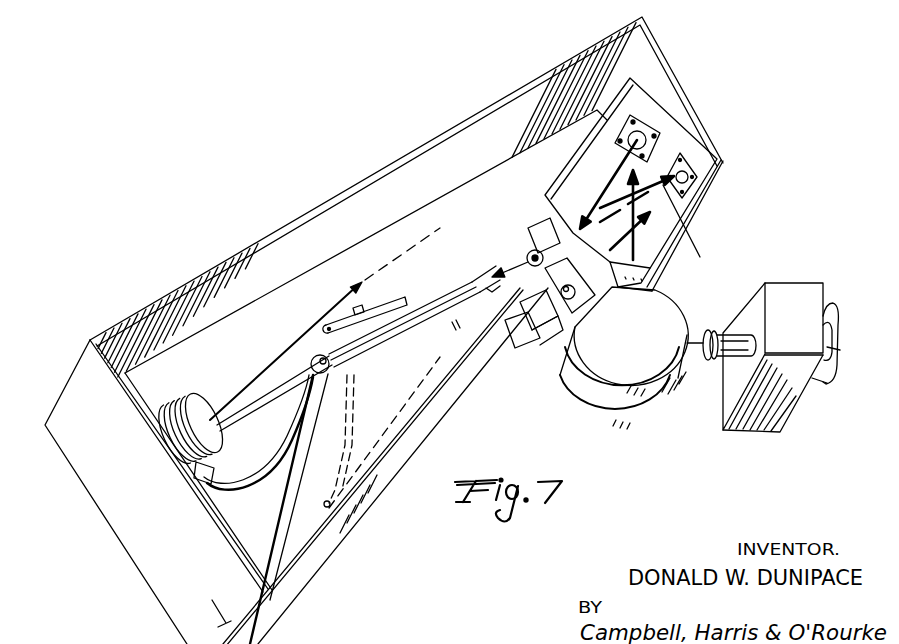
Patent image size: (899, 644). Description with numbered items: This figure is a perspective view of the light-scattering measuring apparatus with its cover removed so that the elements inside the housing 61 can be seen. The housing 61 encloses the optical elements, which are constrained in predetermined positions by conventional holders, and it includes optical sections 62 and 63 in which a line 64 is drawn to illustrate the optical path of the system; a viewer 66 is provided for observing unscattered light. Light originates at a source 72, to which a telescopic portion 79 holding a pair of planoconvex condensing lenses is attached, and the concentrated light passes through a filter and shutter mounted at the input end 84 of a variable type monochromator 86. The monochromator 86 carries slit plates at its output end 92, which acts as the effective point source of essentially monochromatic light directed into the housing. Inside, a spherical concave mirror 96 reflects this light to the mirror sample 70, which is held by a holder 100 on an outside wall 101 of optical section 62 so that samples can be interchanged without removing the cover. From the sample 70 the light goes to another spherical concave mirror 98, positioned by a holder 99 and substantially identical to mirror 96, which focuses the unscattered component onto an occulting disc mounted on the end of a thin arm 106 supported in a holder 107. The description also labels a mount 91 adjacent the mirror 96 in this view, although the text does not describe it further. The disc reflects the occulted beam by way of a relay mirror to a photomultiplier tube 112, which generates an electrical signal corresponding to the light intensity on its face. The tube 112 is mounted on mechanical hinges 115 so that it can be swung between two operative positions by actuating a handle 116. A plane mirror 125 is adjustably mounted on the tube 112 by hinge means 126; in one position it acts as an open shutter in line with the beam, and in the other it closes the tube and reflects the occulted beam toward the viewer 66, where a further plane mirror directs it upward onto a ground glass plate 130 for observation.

The housing 61 is at (380, 500).
The optical section 62 is at (605, 209).
The optical section 63 is at (465, 249).
The line 64 is at (530, 252).
The viewer 66 is at (488, 388).
The mirror sample 70 is at (540, 300).
The source 72 is at (797, 292).
The telescopic portion 79 is at (735, 331).
The input end 84 is at (686, 360).
The variable type monochromator 86 is at (650, 360).
The mirror mount 91 is at (651, 124).
The output end 92 is at (627, 291).
The spherical concave mirror 96 is at (648, 205).
The spherical concave mirror 98 is at (690, 158).
The holder 99 is at (698, 165).
The holder 100 is at (578, 292).
The outside wall 101 is at (540, 335).
The thin arm 106 is at (483, 300).
The holder 107 is at (551, 218).
The photomultiplier tube 112 is at (378, 360).
The mechanical hinges 115 is at (378, 300).
The handle 116 is at (286, 481).
The plane mirror 125 is at (489, 278).
The hinge means 126 is at (455, 324).
The ground glass plate 130 is at (516, 350).